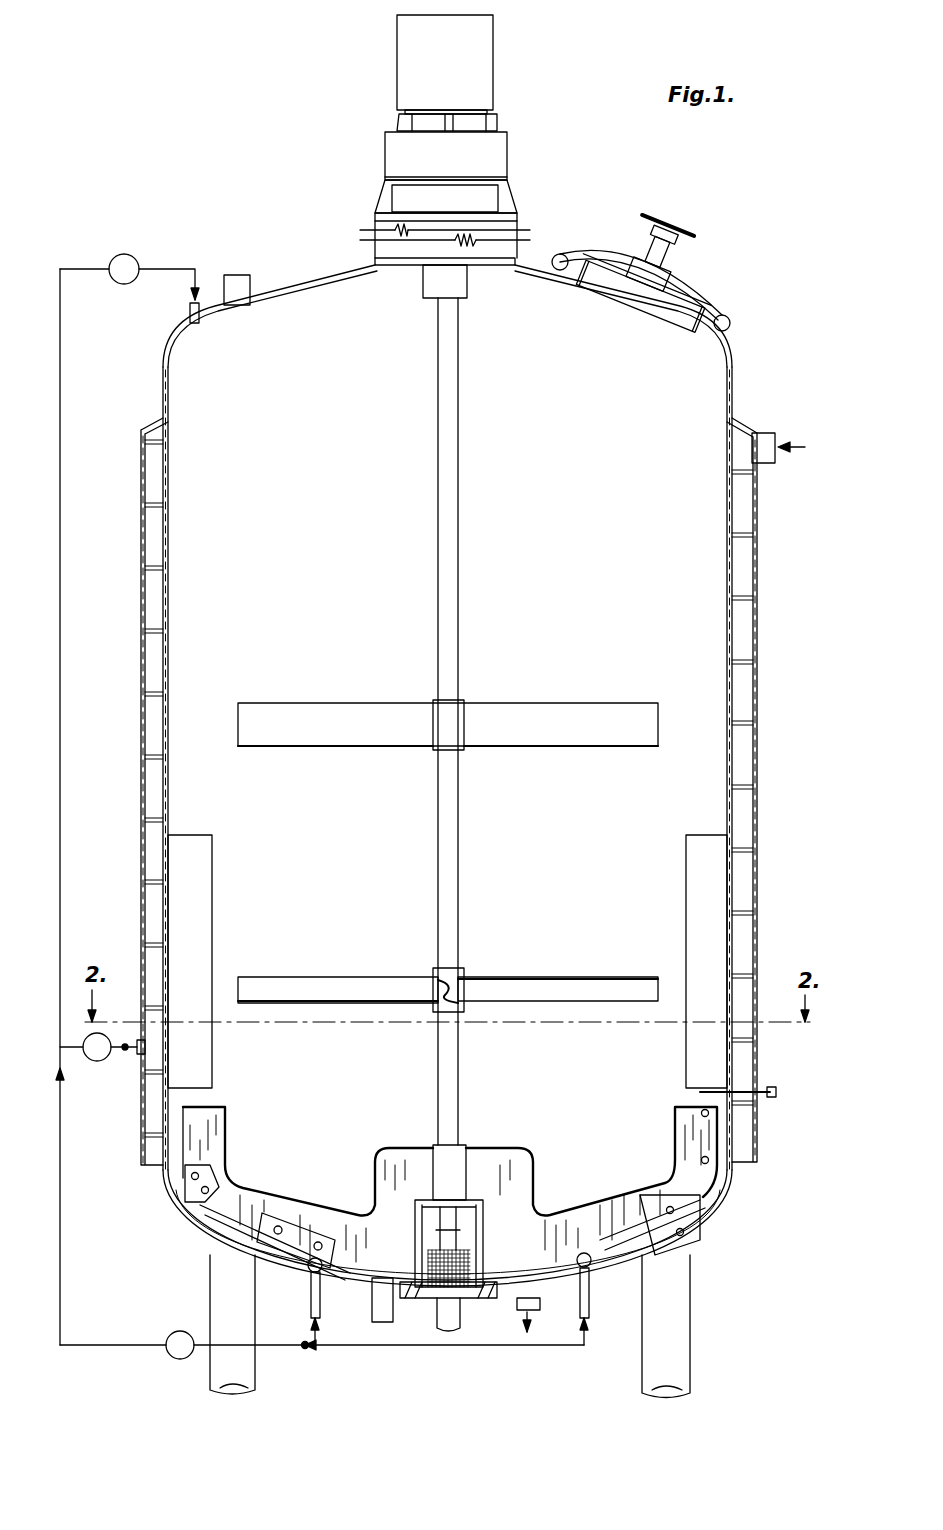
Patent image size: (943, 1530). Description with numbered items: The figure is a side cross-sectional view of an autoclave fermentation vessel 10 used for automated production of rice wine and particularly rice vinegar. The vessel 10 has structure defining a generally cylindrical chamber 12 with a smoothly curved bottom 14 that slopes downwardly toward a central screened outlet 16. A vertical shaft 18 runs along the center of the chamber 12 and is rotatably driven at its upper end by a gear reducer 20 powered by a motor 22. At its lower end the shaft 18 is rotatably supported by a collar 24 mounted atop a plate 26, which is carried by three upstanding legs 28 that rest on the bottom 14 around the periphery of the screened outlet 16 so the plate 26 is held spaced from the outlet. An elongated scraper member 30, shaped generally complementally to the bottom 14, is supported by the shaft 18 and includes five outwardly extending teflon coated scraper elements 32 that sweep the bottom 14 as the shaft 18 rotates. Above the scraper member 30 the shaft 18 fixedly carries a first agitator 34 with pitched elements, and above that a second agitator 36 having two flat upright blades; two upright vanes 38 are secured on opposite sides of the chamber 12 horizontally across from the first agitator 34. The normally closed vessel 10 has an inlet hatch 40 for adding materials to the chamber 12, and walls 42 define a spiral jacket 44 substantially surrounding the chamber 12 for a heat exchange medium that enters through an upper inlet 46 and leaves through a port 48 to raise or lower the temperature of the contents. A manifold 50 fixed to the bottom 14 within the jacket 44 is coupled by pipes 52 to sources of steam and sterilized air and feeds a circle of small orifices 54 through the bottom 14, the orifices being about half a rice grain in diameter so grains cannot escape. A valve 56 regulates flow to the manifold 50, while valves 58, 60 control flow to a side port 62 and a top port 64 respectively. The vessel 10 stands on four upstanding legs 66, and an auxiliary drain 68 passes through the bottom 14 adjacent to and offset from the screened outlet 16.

The autoclave fermentation vessel 10 is at (268, 166).
The cylindrical chamber 12 is at (447, 775).
The vessel bottom 14 is at (243, 1230).
The screened outlet 16 is at (452, 1300).
The vertical shaft 18 is at (458, 855).
The gear reducer 20 is at (500, 159).
The motor 22 is at (484, 44).
The collar 24 is at (458, 1180).
The plate 26 is at (480, 1205).
The upstanding legs 28 is at (415, 1207).
The scraper member 30 is at (313, 1213).
The scraper elements 32 is at (166, 1196).
The first agitator 34 is at (515, 978).
The second agitator 36 is at (523, 710).
The upright vanes 38 is at (212, 840).
The inlet hatch 40 is at (690, 300).
The jacket walls 42 is at (757, 744).
The jacket 44 is at (745, 585).
The upper inlet 46 is at (774, 440).
The port 48 is at (541, 1312).
The manifold 50 is at (588, 1284).
The pipes 52 is at (321, 1310).
The orifices 54 is at (306, 1262).
The valve 56 is at (171, 1333).
The valve 58 is at (100, 1061).
The valve 60 is at (128, 255).
The side port 62 is at (136, 1040).
The top port 64 is at (188, 314).
The upstanding legs 66 is at (250, 1387).
The auxiliary drain 68 is at (384, 1324).